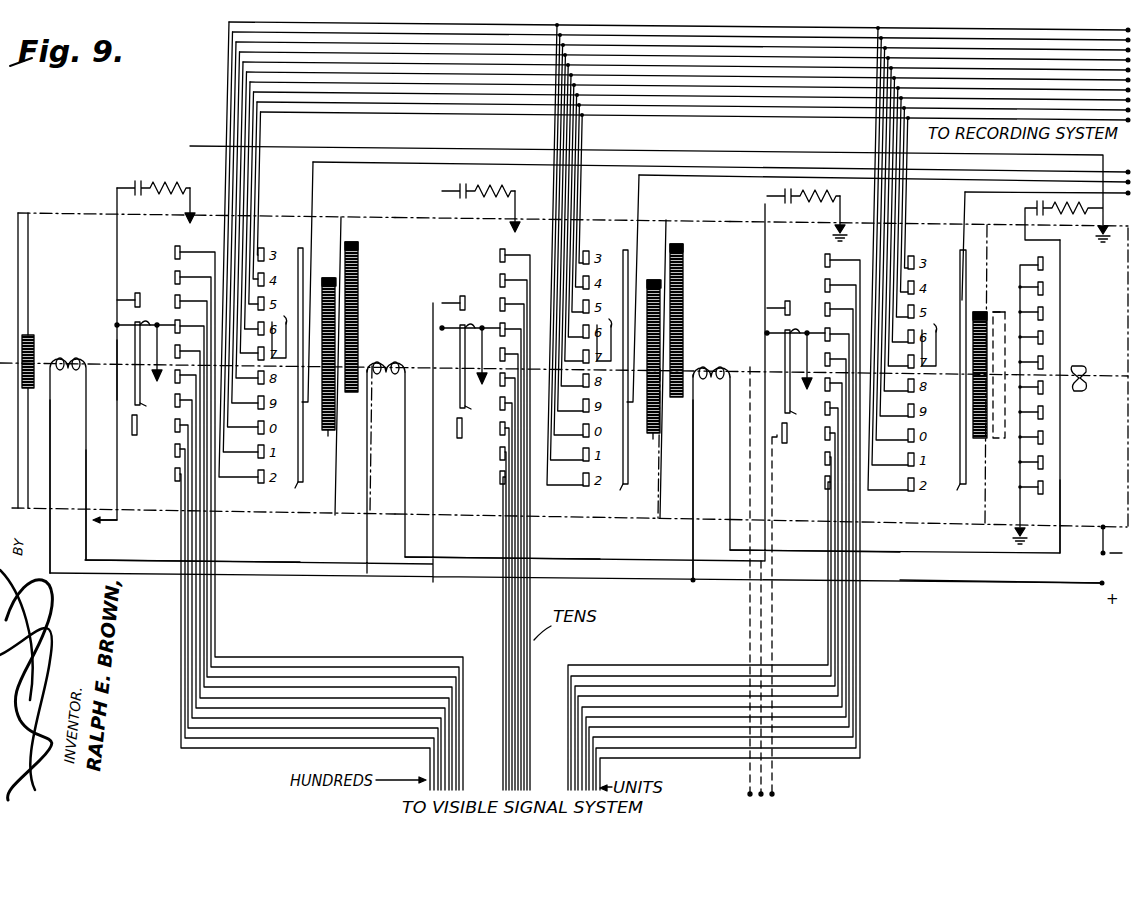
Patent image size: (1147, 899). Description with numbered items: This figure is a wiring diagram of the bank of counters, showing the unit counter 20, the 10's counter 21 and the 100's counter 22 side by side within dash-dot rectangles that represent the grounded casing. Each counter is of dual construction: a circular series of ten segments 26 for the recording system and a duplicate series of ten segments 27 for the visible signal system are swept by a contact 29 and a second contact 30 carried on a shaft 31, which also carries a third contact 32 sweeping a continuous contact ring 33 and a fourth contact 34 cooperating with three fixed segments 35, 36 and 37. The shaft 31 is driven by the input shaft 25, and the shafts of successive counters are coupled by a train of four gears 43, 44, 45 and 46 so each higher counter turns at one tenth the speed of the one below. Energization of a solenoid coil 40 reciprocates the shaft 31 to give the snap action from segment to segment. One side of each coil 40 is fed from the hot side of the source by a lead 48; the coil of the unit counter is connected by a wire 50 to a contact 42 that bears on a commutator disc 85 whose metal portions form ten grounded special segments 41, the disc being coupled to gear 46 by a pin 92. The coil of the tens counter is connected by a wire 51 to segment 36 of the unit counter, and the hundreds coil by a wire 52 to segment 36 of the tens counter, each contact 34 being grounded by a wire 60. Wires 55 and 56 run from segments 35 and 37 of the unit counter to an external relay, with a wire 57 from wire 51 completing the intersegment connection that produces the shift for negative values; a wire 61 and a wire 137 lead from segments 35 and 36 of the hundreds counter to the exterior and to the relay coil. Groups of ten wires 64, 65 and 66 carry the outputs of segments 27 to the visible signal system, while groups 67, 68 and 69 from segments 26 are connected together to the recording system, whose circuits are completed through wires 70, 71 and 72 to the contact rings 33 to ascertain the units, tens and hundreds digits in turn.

The unit counter 20 is at (736, 222).
The 10's counter 21 is at (404, 219).
The 100's counter 22 is at (70, 216).
The input shaft 25 is at (1076, 392).
The series of ten segments 26 is at (262, 250).
The second series of ten segments 27 is at (177, 245).
The contact 29 is at (589, 344).
The second contact 30 is at (175, 326).
The shaft 31 is at (304, 402).
The third contact 32 is at (615, 316).
The contact ring 33 is at (298, 488).
The fourth contact 34 is at (142, 318).
The segment 35 is at (134, 296).
The segment 36 is at (478, 409).
The segment 37 is at (134, 437).
The solenoid coil 40 is at (64, 356).
The special segments 41 is at (1038, 258).
The contact 42 is at (1054, 337).
The gear 43 is at (29, 389).
The gear 44 is at (359, 261).
The gear 45 is at (327, 277).
The gear 46 is at (328, 432).
The lead 48 is at (48, 456).
The wire 50 is at (730, 459).
The wire 51 is at (405, 452).
The wire 52 is at (87, 445).
The wire 55 is at (748, 607).
The wire 56 is at (773, 607).
The wire 57 is at (762, 641).
The wire 60 is at (163, 343).
The wire 61 is at (117, 352).
The group of ten wires 64 is at (872, 678).
The group of ten wires 65 is at (492, 632).
The group of ten wires 66 is at (215, 634).
The group of ten wires 67 is at (868, 142).
The group of ten wires 68 is at (588, 147).
The group of ten wires 69 is at (266, 133).
The wire 70 is at (990, 194).
The wire 71 is at (664, 181).
The wire 72 is at (363, 166).
The commutator disc 85 is at (998, 440).
The pin 92 is at (993, 314).
The wire 137 is at (103, 520).